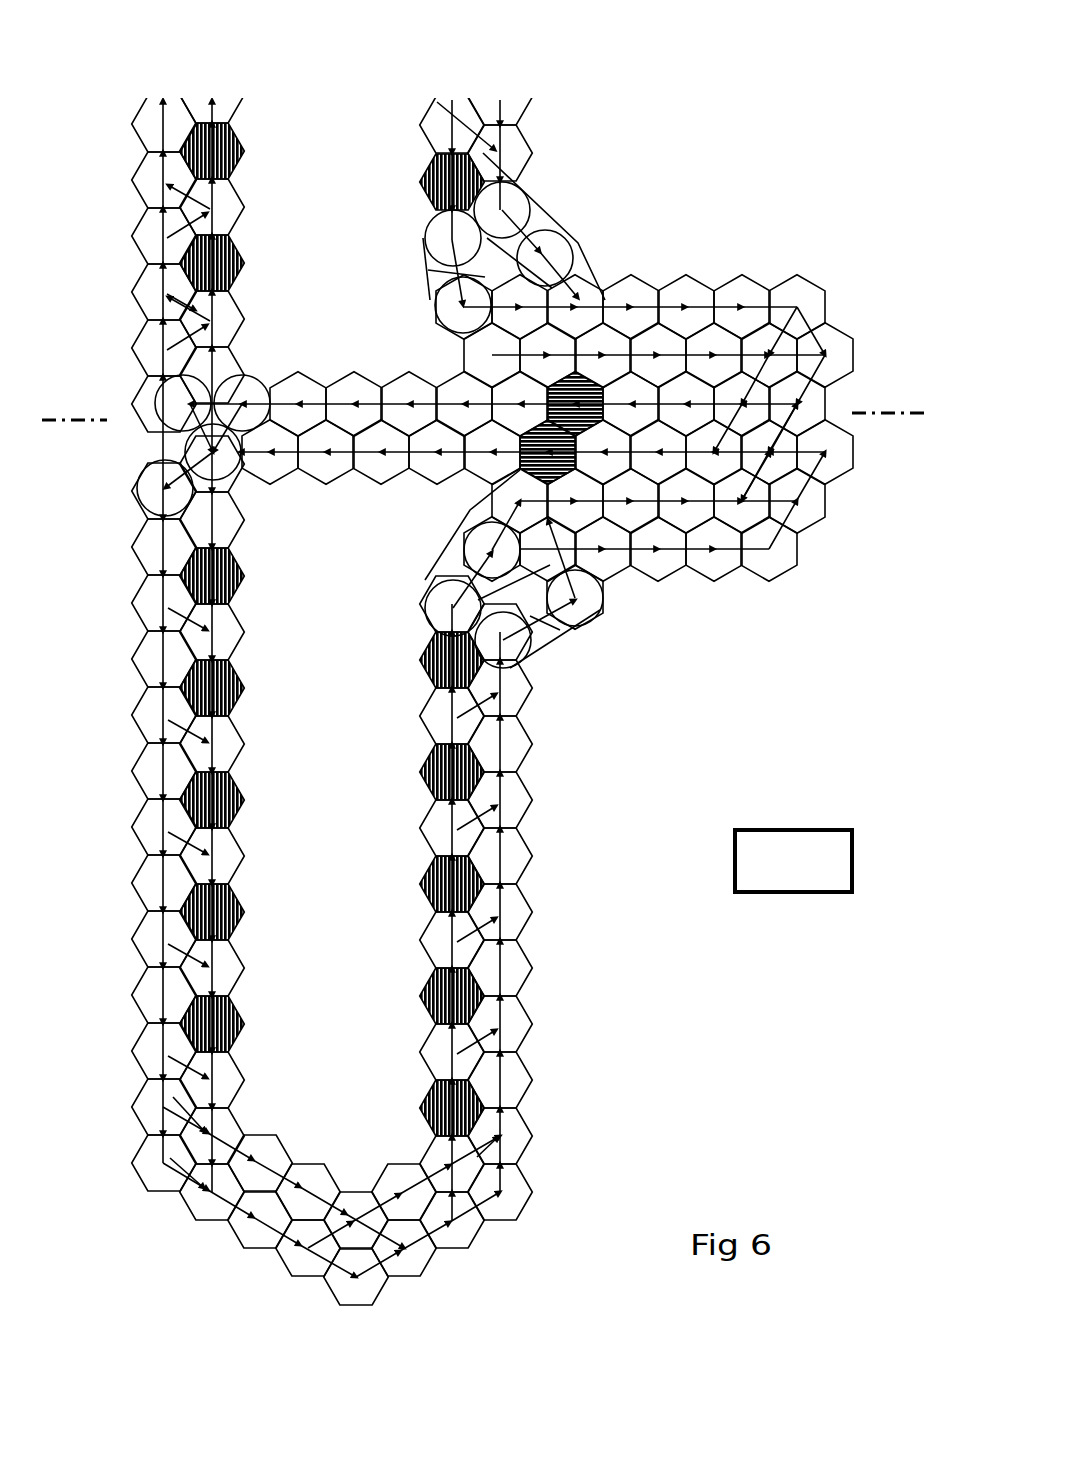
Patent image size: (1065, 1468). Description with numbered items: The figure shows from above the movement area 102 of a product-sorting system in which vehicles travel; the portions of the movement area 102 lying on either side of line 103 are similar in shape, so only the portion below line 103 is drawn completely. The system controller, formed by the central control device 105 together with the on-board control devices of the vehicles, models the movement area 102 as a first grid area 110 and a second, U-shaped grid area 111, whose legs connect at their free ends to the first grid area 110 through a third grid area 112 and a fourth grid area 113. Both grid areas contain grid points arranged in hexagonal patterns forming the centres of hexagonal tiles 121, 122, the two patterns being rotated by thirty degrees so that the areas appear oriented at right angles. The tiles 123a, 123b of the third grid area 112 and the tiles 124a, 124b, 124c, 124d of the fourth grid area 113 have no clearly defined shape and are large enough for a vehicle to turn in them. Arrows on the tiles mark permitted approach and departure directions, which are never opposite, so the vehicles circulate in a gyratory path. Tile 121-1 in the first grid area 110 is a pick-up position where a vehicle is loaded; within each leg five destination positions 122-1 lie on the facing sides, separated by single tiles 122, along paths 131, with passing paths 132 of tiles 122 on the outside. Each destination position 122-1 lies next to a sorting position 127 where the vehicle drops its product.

The movement area 102 is at (744, 186).
The line 103 is at (66, 417).
The central control device 105 is at (797, 878).
The first grid area 110 is at (704, 643).
The second grid area 111 is at (582, 975).
The third grid area 112 is at (122, 470).
The fourth grid area 113 is at (572, 698).
The hexagonal tile 121 is at (434, 474).
The pick-up position tile 121-1 is at (562, 470).
The hexagonal tile 122 is at (236, 982).
The destination position 122-1 is at (233, 593).
The tile of third grid area 123a is at (236, 482).
The tile of third grid area 123b is at (137, 492).
The tile of fourth grid area 124a is at (488, 550).
The tile of fourth grid area 124b is at (568, 632).
The tile of fourth grid area 124c is at (440, 584).
The tile of fourth grid area 124d is at (540, 648).
The sorting position 127 is at (332, 744).
The path 131 is at (208, 1230).
The passing path 132 is at (158, 1215).